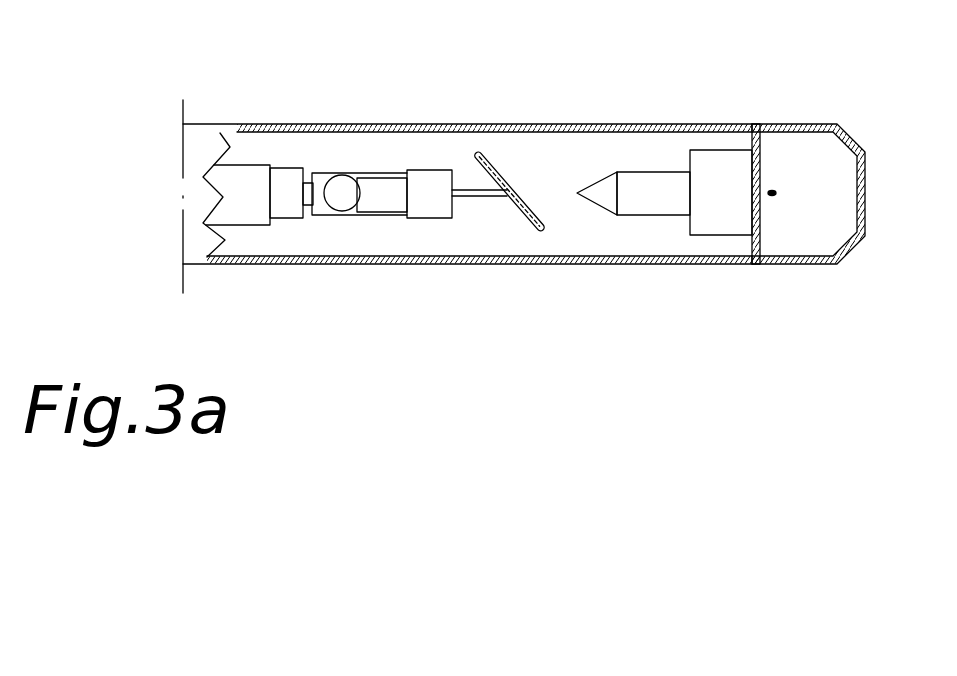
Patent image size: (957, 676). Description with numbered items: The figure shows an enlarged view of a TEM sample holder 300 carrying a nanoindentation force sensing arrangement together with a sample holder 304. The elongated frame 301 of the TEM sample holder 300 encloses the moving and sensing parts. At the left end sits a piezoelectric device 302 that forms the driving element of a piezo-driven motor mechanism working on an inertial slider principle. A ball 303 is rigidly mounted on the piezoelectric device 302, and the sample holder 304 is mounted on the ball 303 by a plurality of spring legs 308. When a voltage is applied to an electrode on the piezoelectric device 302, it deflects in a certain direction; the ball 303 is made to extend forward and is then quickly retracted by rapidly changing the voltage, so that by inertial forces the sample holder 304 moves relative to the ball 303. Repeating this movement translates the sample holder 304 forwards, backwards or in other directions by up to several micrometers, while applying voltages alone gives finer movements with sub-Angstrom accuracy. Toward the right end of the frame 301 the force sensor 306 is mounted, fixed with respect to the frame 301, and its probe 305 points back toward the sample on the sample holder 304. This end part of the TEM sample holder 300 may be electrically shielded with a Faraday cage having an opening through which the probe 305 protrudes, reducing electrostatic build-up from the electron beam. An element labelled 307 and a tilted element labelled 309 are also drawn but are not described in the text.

The TEM sample holder 300 is at (630, 306).
The frame 301 is at (555, 262).
The piezoelectric device 302 is at (253, 186).
The ball 303 is at (342, 193).
The sample holder 304 is at (437, 197).
The probe 305 is at (640, 190).
The force sensor 306 is at (725, 203).
The window 307 is at (771, 192).
The spring legs 308 is at (383, 173).
The mirror 309 is at (495, 168).